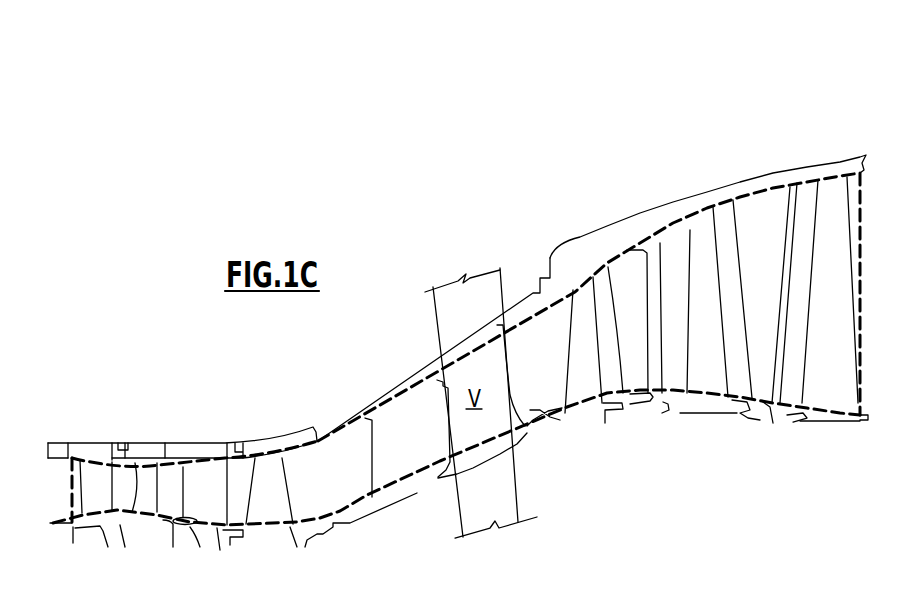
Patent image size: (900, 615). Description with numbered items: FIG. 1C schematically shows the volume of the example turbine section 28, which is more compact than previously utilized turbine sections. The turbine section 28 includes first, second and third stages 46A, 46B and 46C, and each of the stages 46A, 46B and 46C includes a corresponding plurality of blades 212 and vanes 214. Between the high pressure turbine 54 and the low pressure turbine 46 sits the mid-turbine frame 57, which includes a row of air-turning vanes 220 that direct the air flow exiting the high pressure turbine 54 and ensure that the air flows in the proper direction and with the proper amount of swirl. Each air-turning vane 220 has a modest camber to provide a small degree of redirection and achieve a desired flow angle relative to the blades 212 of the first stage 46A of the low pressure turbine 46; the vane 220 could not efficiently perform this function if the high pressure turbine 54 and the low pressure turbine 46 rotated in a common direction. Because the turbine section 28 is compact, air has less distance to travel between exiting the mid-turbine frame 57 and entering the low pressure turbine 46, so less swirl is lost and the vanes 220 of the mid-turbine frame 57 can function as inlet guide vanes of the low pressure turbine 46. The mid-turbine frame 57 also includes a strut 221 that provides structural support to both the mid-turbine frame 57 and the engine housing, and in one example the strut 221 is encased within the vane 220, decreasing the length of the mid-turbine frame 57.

The turbine section 28 is at (712, 58).
The low pressure turbine 46 is at (857, 110).
The first stage 46A is at (575, 465).
The second stage 46B is at (685, 462).
The third stage 46C is at (799, 464).
The high pressure turbine 54 is at (292, 415).
The mid-turbine frame 57 is at (437, 390).
The blades 212 is at (583, 387).
The vanes 214 is at (628, 272).
The air-turning vane 220 is at (470, 372).
The strut 221 is at (473, 507).